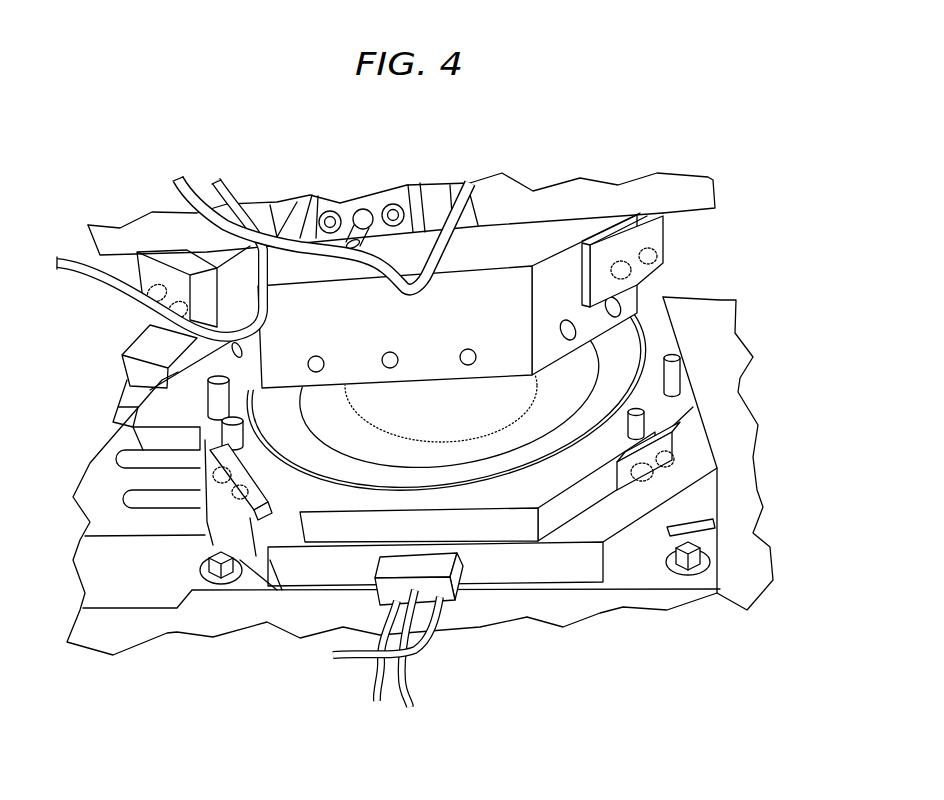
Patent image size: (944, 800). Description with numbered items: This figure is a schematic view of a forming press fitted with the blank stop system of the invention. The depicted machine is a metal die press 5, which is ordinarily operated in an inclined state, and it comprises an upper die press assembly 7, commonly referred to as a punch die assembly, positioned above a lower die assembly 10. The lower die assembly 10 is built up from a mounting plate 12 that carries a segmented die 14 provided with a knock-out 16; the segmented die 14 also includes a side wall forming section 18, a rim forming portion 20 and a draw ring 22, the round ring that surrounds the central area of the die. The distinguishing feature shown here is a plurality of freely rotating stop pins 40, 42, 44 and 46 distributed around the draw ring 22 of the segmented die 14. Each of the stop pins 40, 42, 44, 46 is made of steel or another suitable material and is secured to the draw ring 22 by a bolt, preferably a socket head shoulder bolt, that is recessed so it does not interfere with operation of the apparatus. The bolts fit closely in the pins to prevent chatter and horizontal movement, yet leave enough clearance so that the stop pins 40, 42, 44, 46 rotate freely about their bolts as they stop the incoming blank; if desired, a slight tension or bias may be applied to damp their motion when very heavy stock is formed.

The metal die press 5 is at (733, 358).
The upper die press assembly 7 is at (583, 268).
The lower die assembly 10 is at (672, 483).
The mounting plate 12 is at (233, 527).
The segmented die 14 is at (253, 396).
The knock-out 16 is at (458, 411).
The side wall forming section 18 is at (612, 354).
The rim forming portion 20 is at (325, 465).
The draw ring 22 is at (266, 461).
The stop pin 40 is at (215, 398).
The stop pin 42 is at (228, 444).
The stop pin 44 is at (640, 424).
The stop pin 46 is at (676, 378).